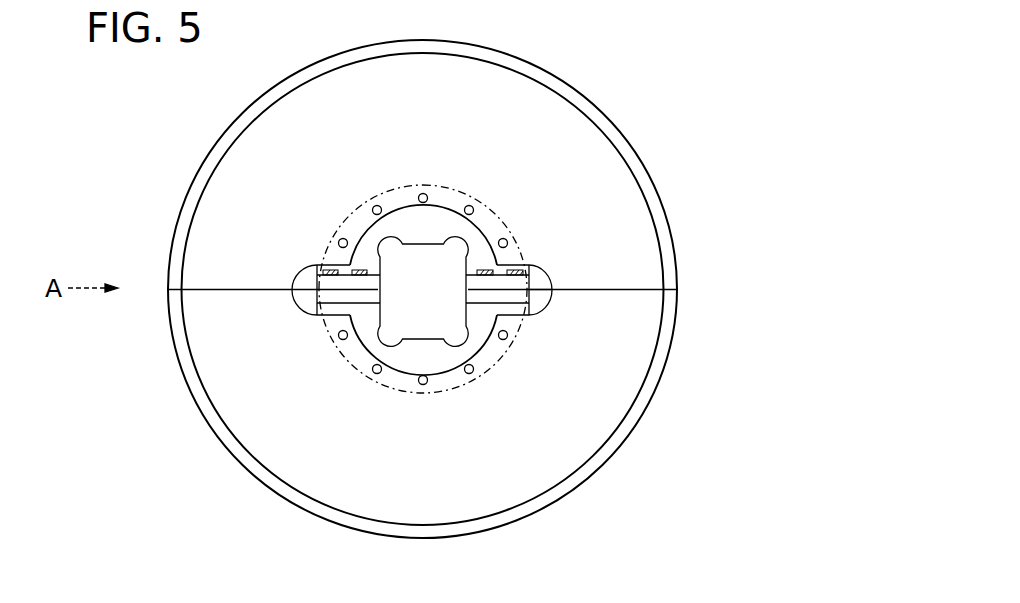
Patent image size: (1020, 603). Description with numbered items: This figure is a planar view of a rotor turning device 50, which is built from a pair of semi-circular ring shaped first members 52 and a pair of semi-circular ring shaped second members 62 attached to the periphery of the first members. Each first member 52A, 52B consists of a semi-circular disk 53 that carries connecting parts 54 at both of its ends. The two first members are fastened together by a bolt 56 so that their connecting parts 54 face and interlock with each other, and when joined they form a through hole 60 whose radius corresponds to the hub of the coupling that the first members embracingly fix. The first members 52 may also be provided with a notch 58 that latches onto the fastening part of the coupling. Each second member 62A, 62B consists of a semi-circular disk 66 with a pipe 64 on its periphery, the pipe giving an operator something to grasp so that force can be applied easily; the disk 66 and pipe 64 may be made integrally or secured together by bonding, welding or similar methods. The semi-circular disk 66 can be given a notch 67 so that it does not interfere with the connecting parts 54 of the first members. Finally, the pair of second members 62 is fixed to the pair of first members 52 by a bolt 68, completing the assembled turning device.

The rotor turning device 50 is at (714, 110).
The first members 52 is at (498, 218).
The first member 52A is at (462, 190).
The first member 52B is at (463, 388).
The semi-circular disk 53 is at (370, 248).
The connecting parts 54 is at (312, 285).
The bolt 56 is at (513, 272).
The notch 58 is at (405, 228).
The through hole 60 is at (426, 330).
The second members 62 is at (372, 480).
The second member 62A is at (657, 181).
The second member 62B is at (667, 370).
The pipe 64 is at (665, 231).
The semi-circular disk 66 is at (590, 137).
The notch 67 is at (552, 278).
The bolt 68 is at (424, 194).